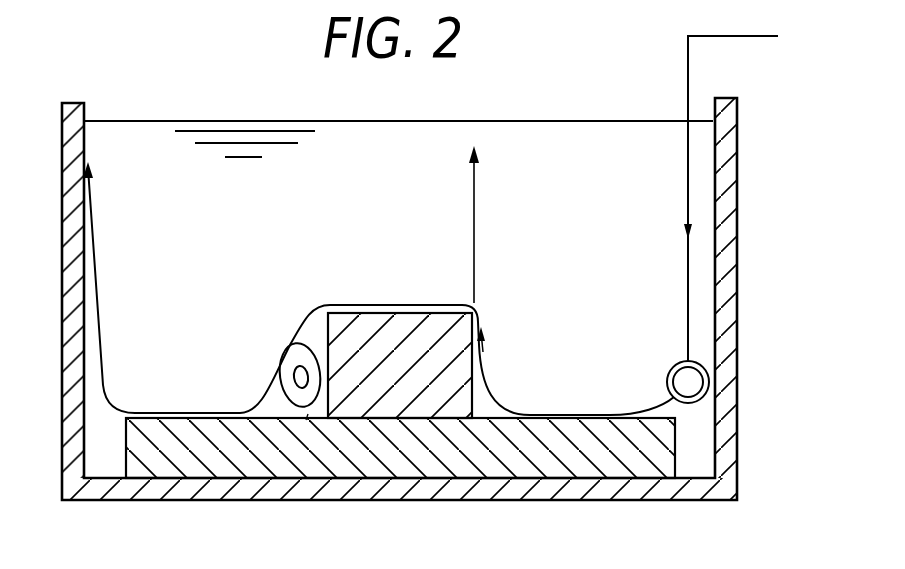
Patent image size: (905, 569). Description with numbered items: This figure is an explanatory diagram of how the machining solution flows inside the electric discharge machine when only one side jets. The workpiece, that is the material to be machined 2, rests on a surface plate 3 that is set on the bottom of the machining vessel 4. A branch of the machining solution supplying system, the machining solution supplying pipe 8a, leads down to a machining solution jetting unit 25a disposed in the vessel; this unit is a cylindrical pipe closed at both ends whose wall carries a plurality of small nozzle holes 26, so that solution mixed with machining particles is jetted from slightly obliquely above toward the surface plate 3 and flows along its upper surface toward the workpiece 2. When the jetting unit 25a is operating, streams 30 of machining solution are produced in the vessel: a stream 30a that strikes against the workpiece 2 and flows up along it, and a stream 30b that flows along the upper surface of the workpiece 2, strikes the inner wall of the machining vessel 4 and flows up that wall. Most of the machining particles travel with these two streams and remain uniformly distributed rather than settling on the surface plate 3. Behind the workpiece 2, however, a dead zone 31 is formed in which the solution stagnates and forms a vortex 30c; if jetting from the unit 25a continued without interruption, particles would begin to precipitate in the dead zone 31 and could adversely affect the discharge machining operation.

The material to be machined 2 is at (403, 407).
The surface plate 3 is at (540, 467).
The machining vessel 4 is at (677, 490).
The machining solution supplying pipe 8a is at (688, 182).
The machining solution jetting unit 25a is at (709, 388).
The nozzle holes 26 is at (672, 394).
The streams of machining solution 30 is at (578, 413).
The stream of machining solution 30a is at (474, 218).
The stream of machining solution 30b is at (380, 305).
The vortex 30c is at (300, 345).
The dead zone 31 is at (309, 413).